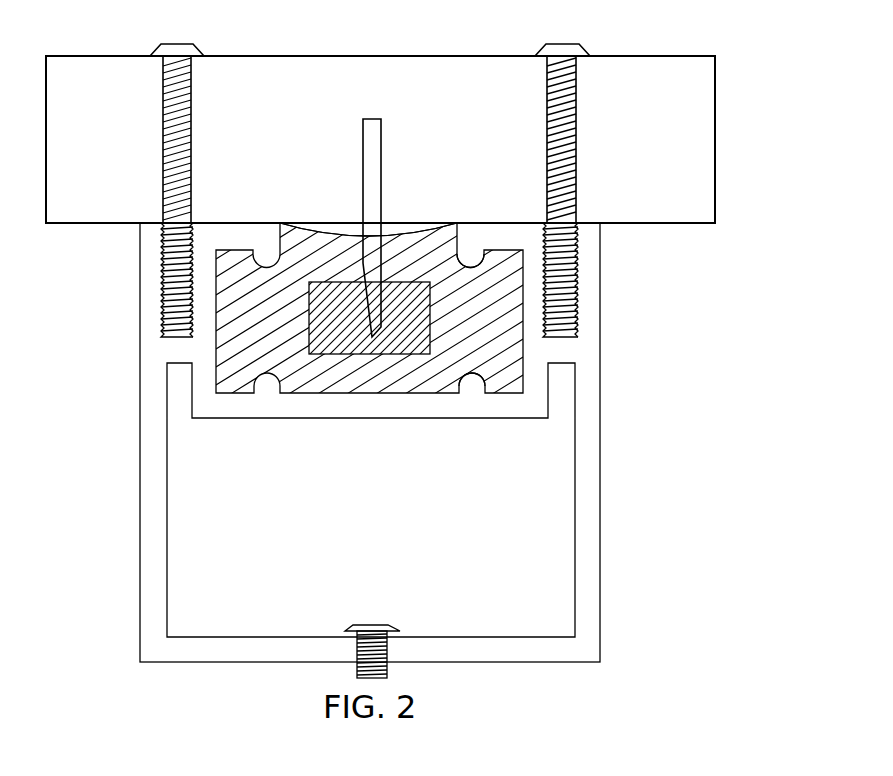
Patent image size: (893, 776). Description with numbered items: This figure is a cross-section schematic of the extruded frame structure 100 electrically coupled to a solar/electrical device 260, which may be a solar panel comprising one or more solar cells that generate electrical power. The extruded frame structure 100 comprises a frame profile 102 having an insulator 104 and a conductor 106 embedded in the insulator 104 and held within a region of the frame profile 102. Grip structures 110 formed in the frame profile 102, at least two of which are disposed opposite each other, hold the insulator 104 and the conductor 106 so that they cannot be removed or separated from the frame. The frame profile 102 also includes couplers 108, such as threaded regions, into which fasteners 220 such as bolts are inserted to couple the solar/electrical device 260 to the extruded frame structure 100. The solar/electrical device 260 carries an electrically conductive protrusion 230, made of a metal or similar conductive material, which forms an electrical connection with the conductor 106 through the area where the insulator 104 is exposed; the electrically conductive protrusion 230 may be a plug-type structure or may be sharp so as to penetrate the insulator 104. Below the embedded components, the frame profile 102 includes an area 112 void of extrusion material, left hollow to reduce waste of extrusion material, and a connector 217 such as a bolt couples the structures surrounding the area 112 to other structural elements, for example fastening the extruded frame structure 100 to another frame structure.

The extruded frame structure 100 is at (413, 355).
The frame profile 102 is at (157, 472).
The insulator 104 is at (338, 233).
The conductor 106 is at (397, 293).
The couplers 108 is at (163, 282).
The grip structures 110 is at (472, 385).
The area void of extrusion material 112 is at (402, 511).
The connector 217 is at (380, 638).
The fasteners 220 is at (160, 137).
The electrically conductive protrusion 230 is at (377, 177).
The solar/electrical device 260 is at (295, 106).